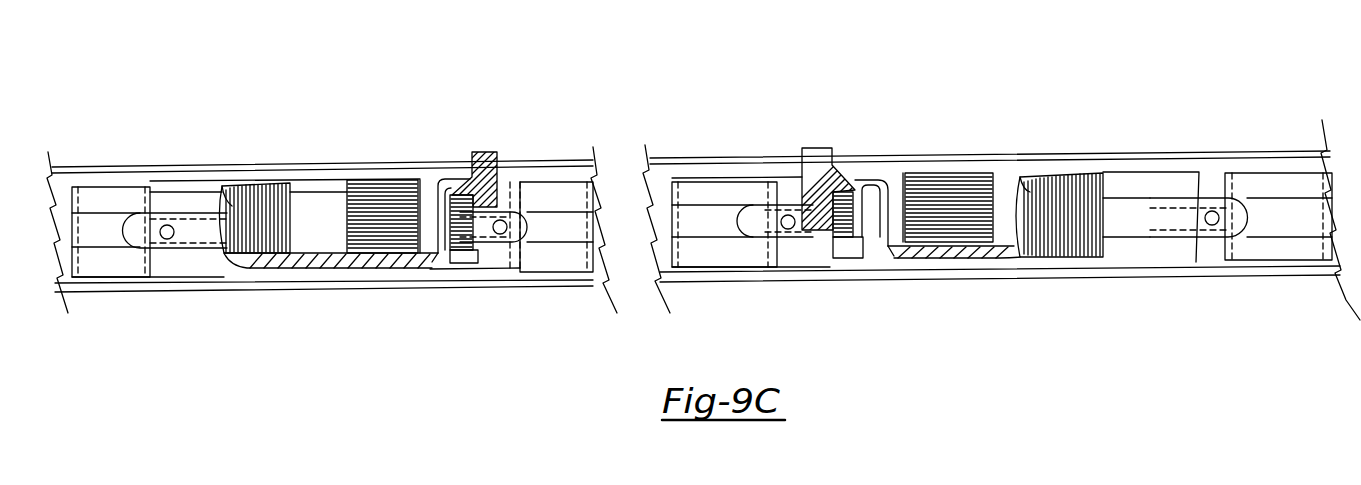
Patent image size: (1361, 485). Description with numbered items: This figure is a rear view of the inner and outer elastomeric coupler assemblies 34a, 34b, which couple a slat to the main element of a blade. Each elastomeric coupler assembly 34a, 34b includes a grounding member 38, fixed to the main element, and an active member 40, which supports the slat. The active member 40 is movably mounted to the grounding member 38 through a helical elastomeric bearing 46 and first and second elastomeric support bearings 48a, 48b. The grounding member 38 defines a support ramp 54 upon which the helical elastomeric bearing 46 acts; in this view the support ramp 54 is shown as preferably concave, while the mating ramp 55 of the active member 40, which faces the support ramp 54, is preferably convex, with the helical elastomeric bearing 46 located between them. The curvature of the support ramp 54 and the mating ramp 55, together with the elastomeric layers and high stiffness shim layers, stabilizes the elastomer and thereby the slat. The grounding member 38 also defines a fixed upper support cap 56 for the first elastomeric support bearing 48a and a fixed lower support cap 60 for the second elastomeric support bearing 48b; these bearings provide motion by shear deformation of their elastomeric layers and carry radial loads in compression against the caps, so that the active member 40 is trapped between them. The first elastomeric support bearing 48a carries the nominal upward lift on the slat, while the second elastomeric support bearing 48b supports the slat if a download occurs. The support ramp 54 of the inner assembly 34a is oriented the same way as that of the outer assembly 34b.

The inner elastomeric coupler assembly 34a is at (432, 97).
The outer elastomeric coupler assembly 34b is at (1135, 80).
The grounding member 38 is at (517, 210).
The active member 40 is at (440, 181).
The helical elastomeric bearing 46 is at (258, 188).
The first elastomeric support bearing 48a is at (345, 232).
The second elastomeric support bearing 48b is at (452, 252).
The support ramp 54 is at (293, 192).
The mating ramp 55 is at (222, 207).
The fixed upper support cap 56 is at (384, 182).
The fixed lower support cap 60 is at (465, 264).